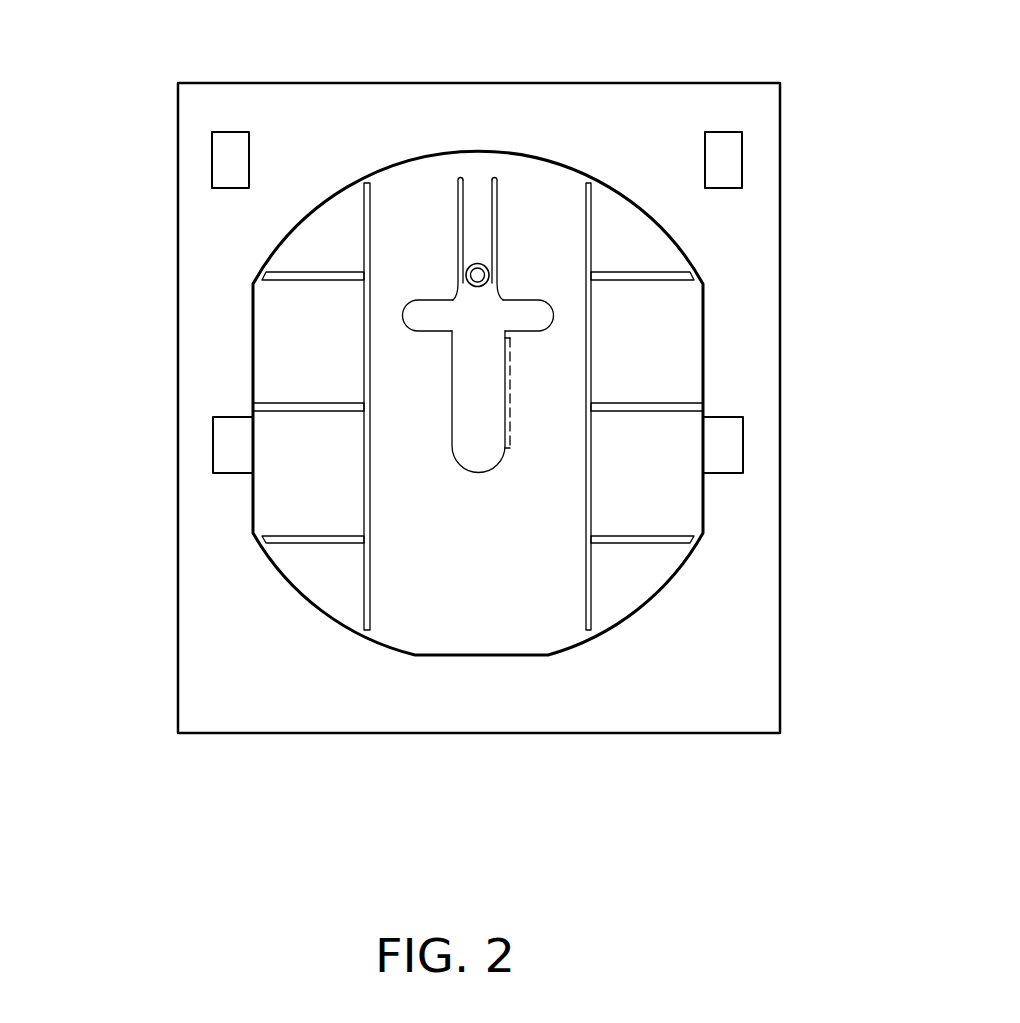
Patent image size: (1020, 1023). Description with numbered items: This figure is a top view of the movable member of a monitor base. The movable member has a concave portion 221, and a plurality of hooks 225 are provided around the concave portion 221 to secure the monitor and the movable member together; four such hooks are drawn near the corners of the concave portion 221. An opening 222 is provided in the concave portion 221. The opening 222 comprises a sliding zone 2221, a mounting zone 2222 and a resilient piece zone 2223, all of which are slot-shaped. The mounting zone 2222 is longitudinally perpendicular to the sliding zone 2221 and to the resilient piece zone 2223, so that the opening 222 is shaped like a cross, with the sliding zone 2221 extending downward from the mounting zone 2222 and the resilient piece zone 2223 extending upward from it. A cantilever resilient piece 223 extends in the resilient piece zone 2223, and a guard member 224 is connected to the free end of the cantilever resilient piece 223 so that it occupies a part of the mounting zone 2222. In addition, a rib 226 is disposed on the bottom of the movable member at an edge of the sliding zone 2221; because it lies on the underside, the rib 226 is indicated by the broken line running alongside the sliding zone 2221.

The concave portion 221 is at (470, 613).
The opening 222 is at (80, 247).
The sliding zone 2221 is at (473, 413).
The mounting zone 2222 is at (477, 308).
The resilient piece zone 2223 is at (460, 217).
The cantilever resilient piece 223 is at (478, 205).
The guard member 224 is at (477, 275).
The hooks 225 is at (227, 160).
The rib 226 is at (510, 385).